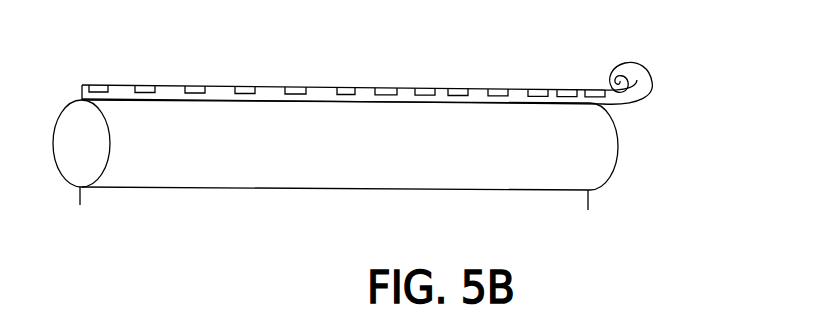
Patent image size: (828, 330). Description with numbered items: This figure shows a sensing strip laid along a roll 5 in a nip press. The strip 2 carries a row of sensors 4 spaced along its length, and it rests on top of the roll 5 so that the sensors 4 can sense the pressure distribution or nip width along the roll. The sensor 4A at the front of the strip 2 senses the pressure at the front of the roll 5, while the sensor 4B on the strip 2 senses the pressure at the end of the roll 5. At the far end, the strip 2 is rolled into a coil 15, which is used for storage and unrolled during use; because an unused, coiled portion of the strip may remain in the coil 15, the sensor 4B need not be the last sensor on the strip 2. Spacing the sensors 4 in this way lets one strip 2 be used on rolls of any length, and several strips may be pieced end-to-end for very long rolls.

The strip 2 is at (218, 85).
The sensors 4 is at (348, 87).
The sensor at the front of the strip 4A is at (100, 86).
The sensor at the end of the roll 4B is at (597, 93).
The roll 5 is at (598, 134).
The coil 15 is at (627, 68).